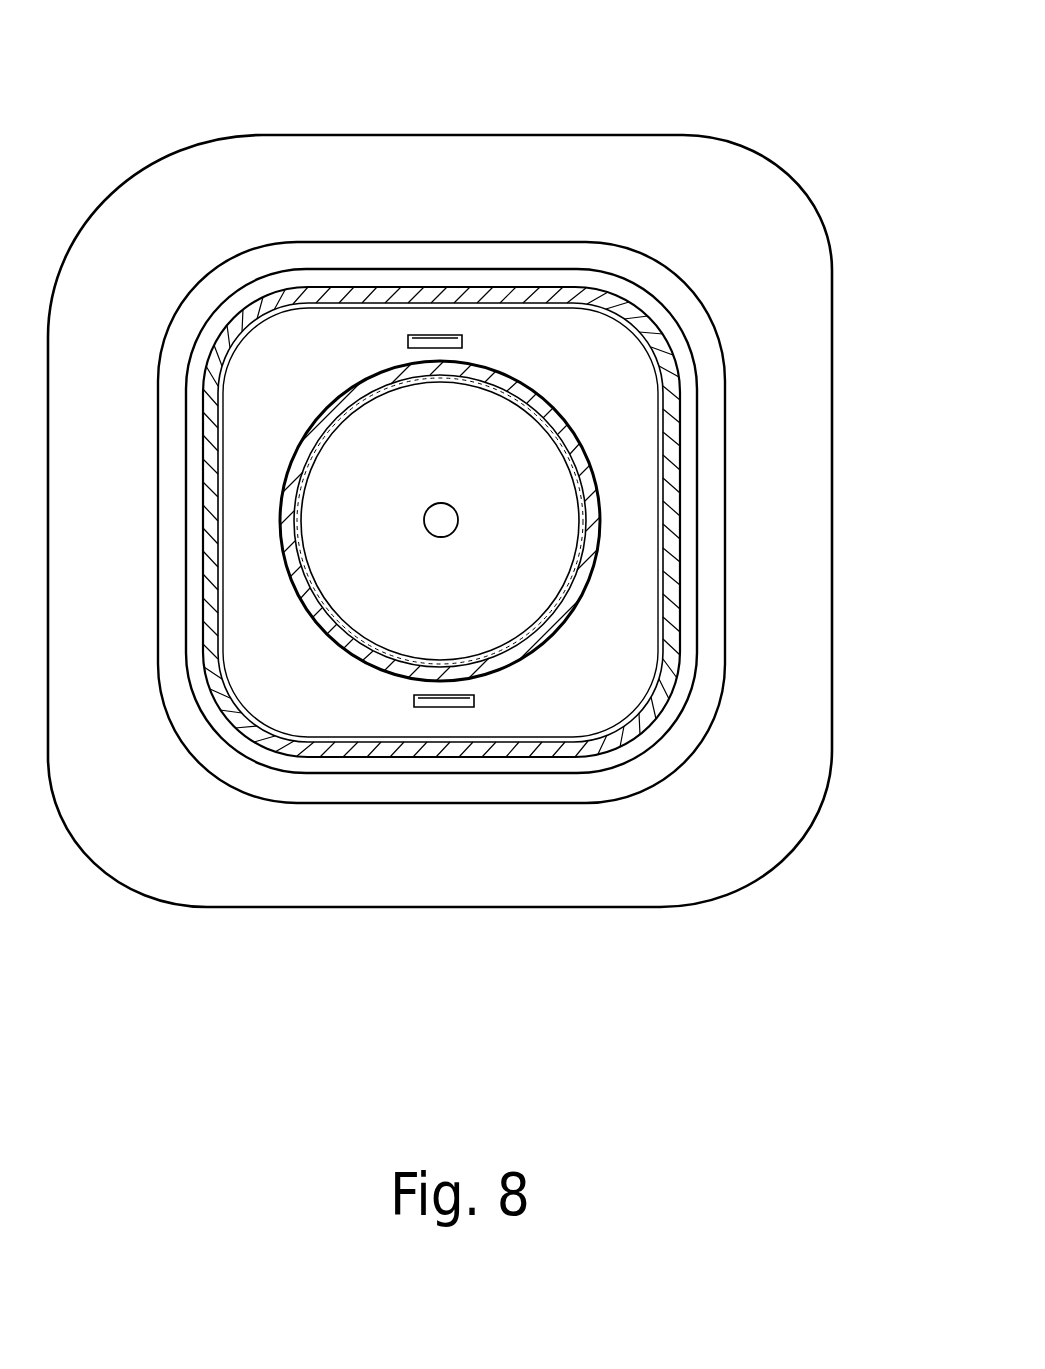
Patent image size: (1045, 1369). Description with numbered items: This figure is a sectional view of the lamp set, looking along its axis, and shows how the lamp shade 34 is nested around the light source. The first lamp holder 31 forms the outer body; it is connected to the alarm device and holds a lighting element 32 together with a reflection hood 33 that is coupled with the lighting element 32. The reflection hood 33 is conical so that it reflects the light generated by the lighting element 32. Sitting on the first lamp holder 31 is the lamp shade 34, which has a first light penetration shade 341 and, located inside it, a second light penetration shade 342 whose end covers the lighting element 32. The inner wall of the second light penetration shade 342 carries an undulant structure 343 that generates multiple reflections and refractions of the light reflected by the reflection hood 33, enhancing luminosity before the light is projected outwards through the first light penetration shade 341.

The first lamp holder 31 is at (682, 872).
The lighting element 32 is at (448, 520).
The reflection hood 33 is at (395, 620).
The lamp shade 34 is at (688, 56).
The first light penetration shade 341 is at (528, 298).
The second light penetration shade 342 is at (542, 410).
The undulant structure 343 is at (382, 386).